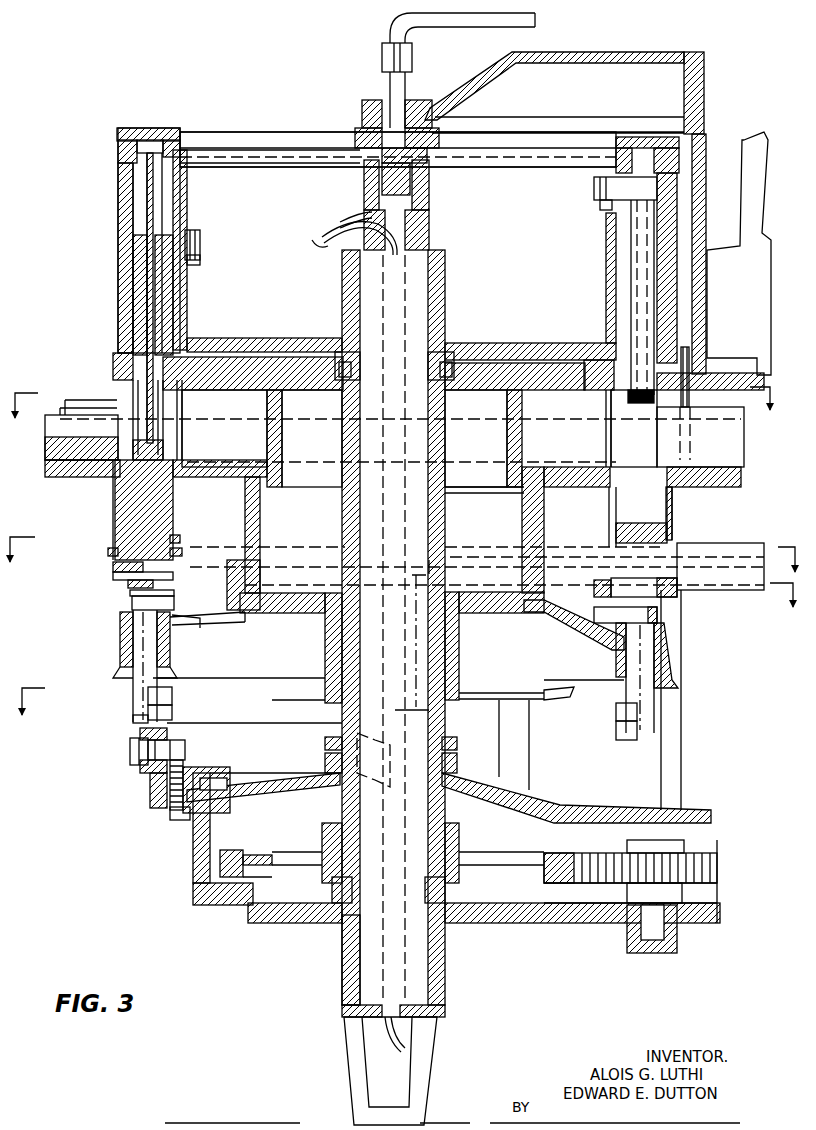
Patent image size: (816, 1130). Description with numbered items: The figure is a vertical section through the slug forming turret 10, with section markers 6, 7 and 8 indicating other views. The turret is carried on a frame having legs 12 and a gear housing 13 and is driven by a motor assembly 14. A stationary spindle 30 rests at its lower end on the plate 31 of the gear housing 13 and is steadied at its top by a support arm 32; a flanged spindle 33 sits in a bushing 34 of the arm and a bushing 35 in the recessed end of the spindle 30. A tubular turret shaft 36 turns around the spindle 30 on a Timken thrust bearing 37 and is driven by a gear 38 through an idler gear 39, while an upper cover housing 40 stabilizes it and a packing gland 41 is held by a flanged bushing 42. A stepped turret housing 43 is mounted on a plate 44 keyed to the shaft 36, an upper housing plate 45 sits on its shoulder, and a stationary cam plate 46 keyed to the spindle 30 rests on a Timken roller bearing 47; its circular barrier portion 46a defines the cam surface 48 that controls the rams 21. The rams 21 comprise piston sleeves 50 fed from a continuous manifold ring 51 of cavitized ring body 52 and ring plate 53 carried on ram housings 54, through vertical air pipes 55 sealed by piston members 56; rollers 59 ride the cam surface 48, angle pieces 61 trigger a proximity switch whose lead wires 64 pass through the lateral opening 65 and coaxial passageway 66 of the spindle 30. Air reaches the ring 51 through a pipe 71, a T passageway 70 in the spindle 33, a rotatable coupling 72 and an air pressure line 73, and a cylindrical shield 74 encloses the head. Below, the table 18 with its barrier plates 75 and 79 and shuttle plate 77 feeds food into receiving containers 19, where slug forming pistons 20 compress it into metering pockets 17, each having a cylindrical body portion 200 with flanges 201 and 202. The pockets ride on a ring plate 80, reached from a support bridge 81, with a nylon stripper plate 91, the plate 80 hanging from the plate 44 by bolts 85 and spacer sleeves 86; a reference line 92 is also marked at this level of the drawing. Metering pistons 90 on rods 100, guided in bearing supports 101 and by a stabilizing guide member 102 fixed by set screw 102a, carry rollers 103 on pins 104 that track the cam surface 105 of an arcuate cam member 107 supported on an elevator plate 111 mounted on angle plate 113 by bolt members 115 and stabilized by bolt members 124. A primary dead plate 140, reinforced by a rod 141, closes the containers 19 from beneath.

The first turret 10 is at (228, 73).
The legs 12 is at (352, 1072).
The gear housing 13 is at (194, 903).
The motor assembly 14 is at (750, 292).
The metering pockets 17 is at (175, 541).
The table 18 is at (205, 464).
The receiving containers 19 is at (113, 495).
The slug forming pistons 20 is at (657, 396).
The rams 21 is at (116, 246).
The stationary spindle 30 is at (432, 228).
The plate 31 is at (344, 961).
The support arm 32 is at (645, 52).
The flanged spindle 33 is at (376, 94).
The bushing 34 is at (430, 100).
The bushing 35 is at (432, 184).
The tubular turret shaft 36 is at (447, 519).
The Timken thrust bearing 37 is at (428, 893).
The gear 38 is at (495, 852).
The idler gear 39 is at (617, 854).
The upper cover housing 40 is at (520, 793).
The packing gland 41 is at (458, 763).
The flanged bushing 42 is at (460, 741).
The stepped turret housing 43 is at (284, 434).
The plate 44 is at (262, 616).
The upper housing plate 45 is at (227, 386).
The stationary cam plate 46 is at (528, 350).
The circular barrier portion 46a is at (187, 313).
The Timken roller bearing 47 is at (430, 364).
The cam surface 48 is at (288, 172).
The piston sleeves 50 is at (156, 398).
The continuous manifold ring 51 is at (135, 128).
The cavitized ring body 52 is at (118, 151).
The ring plate 53 is at (165, 140).
The cylindrical ram housings 54 is at (118, 221).
The vertical air pipes 55 is at (153, 202).
The piston members 56 is at (118, 363).
The cam follower roller 59 is at (192, 259).
The angle piece 61 is at (205, 232).
The lead wires 64 is at (337, 236).
The lateral opening 65 is at (358, 212).
The coaxial passageway 66 is at (405, 216).
The T passageway 70 is at (440, 136).
The pipe 71 is at (298, 150).
The rotatable coupling 72 is at (382, 58).
The air pressure line 73 is at (540, 20).
The cylindrical shield 74 is at (118, 189).
The cylindrical barrier plate 75 is at (45, 436).
The shuttle plate 77 is at (735, 446).
The cylindrical barrier plate 79 is at (182, 408).
The ring plate 80 is at (113, 578).
The support bridge 81 is at (742, 584).
The bolts 85 is at (180, 633).
The spacer sleeves 86 is at (235, 600).
The metering piston 90 is at (128, 586).
The nylon stripper plate 91 is at (113, 567).
The axis 92 is at (261, 547).
The rod 100 is at (133, 693).
The bearing supports 101 is at (120, 645).
The stabilizing guide member 102 is at (132, 606).
The set screw 102a is at (130, 594).
The roller member 103 is at (172, 692).
The pin 104 is at (172, 710).
The cam surface 105 is at (133, 716).
The arcuate cam member 107 is at (140, 768).
The arcuate elevator plate 111 is at (150, 790).
The angle plate 113 is at (198, 770).
The bolt members 115 is at (178, 821).
The bolt members 124 is at (130, 751).
The primary dead plate 140 is at (605, 545).
The rod 141 is at (664, 580).
The cylindrical body portion 200 is at (182, 553).
The flange 201 is at (180, 539).
The flange 202 is at (108, 552).
The section line 6 is at (392, 416).
The section line 7 is at (401, 557).
The section line 8 is at (400, 655).